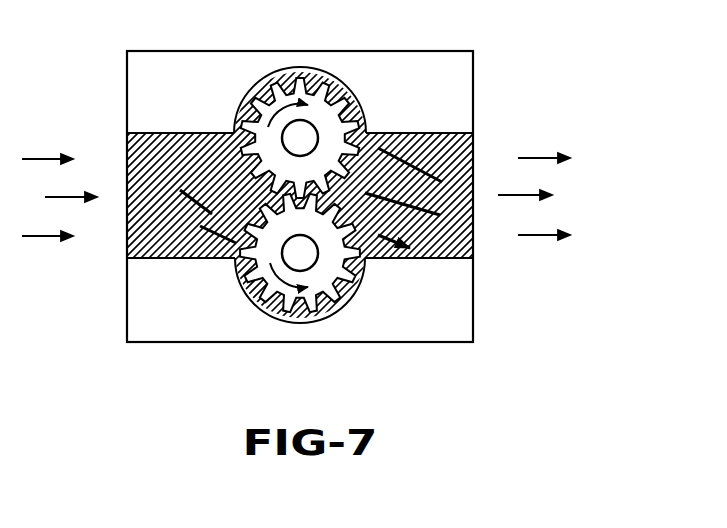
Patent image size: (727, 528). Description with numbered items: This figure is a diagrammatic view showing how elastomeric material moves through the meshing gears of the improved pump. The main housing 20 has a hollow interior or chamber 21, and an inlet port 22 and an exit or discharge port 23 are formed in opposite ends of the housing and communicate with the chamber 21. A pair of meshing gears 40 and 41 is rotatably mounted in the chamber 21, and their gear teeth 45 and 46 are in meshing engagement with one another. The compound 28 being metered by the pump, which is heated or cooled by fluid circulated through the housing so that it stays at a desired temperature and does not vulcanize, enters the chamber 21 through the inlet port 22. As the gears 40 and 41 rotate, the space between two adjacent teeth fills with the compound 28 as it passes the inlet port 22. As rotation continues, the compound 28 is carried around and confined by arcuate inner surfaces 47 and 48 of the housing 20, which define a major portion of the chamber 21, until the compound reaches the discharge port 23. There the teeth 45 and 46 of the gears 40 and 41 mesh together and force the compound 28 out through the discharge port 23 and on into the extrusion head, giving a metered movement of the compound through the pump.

The main housing 20 is at (489, 87).
The chamber 21 is at (218, 168).
The inlet port 22 is at (127, 260).
The discharge port 23 is at (474, 262).
The compound 28 is at (127, 131).
The gear 40 is at (330, 102).
The gear 41 is at (287, 287).
The gear teeth 45 is at (323, 76).
The gear teeth 46 is at (337, 305).
The arcuate inner surface 47 is at (263, 86).
The arcuate inner surface 48 is at (272, 310).